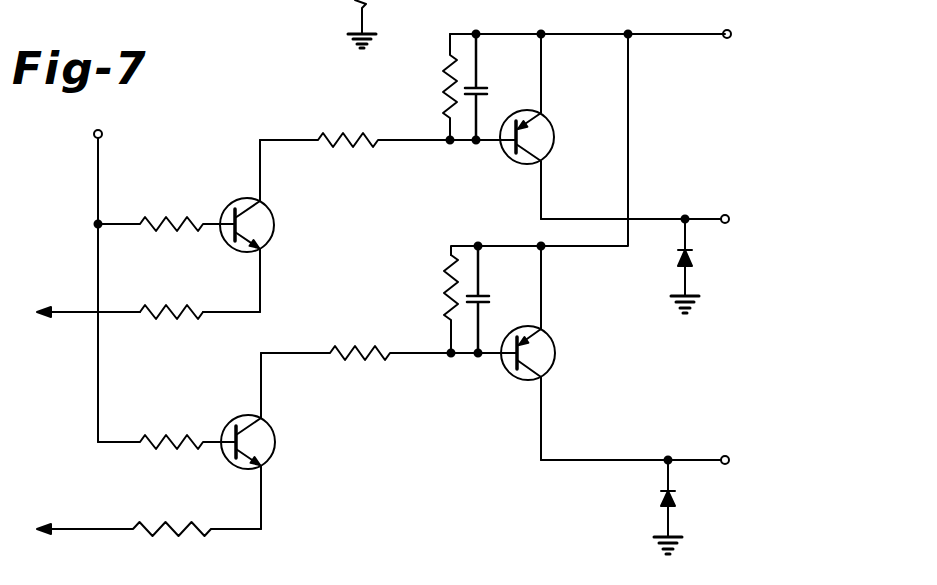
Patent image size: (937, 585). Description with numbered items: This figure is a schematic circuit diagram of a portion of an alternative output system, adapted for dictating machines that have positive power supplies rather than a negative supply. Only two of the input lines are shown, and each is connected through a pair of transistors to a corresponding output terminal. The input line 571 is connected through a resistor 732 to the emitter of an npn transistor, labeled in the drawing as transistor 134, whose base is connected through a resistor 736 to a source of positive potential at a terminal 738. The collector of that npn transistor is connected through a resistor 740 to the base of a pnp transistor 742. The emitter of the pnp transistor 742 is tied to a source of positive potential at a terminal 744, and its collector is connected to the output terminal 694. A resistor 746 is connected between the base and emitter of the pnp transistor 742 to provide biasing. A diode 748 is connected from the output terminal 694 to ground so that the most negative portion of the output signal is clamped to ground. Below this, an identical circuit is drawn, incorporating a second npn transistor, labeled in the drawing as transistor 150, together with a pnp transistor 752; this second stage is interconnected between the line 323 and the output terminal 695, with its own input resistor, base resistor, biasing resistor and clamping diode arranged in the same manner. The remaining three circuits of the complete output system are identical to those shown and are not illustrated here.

The terminal 738 is at (102, 136).
The transistor 134 is at (245, 197).
The resistor 736 is at (191, 212).
The input line 571 is at (72, 311).
The resistor 732 is at (167, 318).
The transistor 150 is at (245, 416).
The line 323 is at (74, 528).
The resistor 746 is at (440, 86).
The resistor 740 is at (346, 150).
The pnp transistor 742 is at (513, 162).
The pnp transistor 752 is at (521, 378).
The terminal 744 is at (730, 37).
The output terminal 694 is at (728, 216).
The diode 748 is at (692, 258).
The output terminal 695 is at (728, 457).